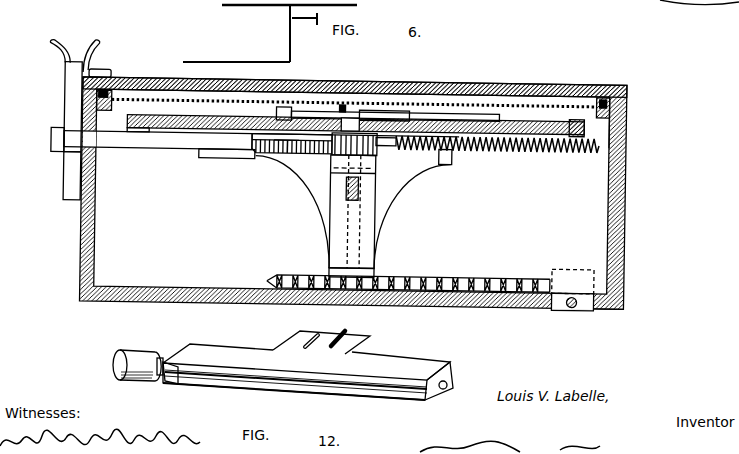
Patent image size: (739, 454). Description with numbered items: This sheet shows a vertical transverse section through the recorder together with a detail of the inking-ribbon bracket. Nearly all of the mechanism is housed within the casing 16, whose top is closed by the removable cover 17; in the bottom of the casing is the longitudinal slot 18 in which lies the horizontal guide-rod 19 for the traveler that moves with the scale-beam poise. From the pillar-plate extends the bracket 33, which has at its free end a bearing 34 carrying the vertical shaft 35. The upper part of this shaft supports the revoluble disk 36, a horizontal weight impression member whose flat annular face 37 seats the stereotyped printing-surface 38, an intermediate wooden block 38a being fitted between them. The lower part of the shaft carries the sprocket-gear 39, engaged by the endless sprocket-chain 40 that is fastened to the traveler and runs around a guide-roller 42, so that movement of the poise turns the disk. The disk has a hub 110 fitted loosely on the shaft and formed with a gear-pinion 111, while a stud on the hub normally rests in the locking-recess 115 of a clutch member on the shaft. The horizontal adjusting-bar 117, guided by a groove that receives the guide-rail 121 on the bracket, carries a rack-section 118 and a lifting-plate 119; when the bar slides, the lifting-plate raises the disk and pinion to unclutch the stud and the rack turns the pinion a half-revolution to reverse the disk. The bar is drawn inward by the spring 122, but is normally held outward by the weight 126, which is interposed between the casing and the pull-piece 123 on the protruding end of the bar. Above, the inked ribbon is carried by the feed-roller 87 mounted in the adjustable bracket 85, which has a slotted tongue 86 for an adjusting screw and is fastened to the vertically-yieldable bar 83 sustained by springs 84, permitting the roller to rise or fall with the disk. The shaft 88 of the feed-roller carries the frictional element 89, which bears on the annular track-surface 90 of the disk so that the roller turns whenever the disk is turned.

In FIG. 6, the casing 16 is at (628, 209).
In FIG. 6, the removable cover 17 is at (523, 77).
In FIG. 6, the longitudinal slot 18 is at (603, 302).
In FIG. 6, the horizontal guide-rod 19 is at (572, 303).
In FIG. 6, the bracket 33 is at (360, 186).
In FIG. 6, the bearing 34 is at (343, 224).
In FIG. 6, the vertical shaft 35 is at (360, 114).
In FIG. 6, the revoluble disk 36 is at (187, 147).
In FIG. 6, the flat annular face 37 is at (612, 120).
In FIG. 6, the stereotyped printing-surface 38 is at (138, 114).
In FIG. 6, the wooden block 38a is at (138, 131).
In FIG. 6, the sprocket-gear 39 is at (290, 272).
In FIG. 6, the endless sprocket-chain 40 is at (477, 272).
In FIG. 6, the guide-roller 42 is at (533, 272).
In FIG. 6, the vertically-yieldable bar 83 is at (474, 97).
In FIG. 6, the springs 84 is at (97, 96).
In FIG. 6, the adjustable bracket 85 is at (410, 108).
In FIG. 12, the adjustable bracket 85 is at (403, 362).
In FIG. 12, the slotted tongue 86 is at (333, 333).
In FIG. 6, the feed-roller 87 is at (393, 106).
In FIG. 12, the feed-roller 87 is at (403, 400).
In FIG. 12, the shaft of feed-roller 88 is at (453, 383).
In FIG. 6, the frictional element 89 is at (284, 104).
In FIG. 12, the frictional element 89 is at (133, 353).
In FIG. 6, the annular track-surface 90 is at (282, 138).
In FIG. 6, the hub 110 is at (343, 101).
In FIG. 6, the gear-pinion 111 is at (330, 151).
In FIG. 6, the locking-recess 115 is at (340, 166).
In FIG. 6, the adjusting-bar 117 is at (217, 156).
In FIG. 6, the rack-section 118 is at (280, 157).
In FIG. 6, the lifting-plate 119 is at (288, 151).
In FIG. 6, the guide-rail 121 is at (453, 152).
In FIG. 6, the spring 122 is at (557, 146).
In FIG. 6, the pull-piece 123 is at (62, 58).
In FIG. 6, the weight 126 is at (65, 192).